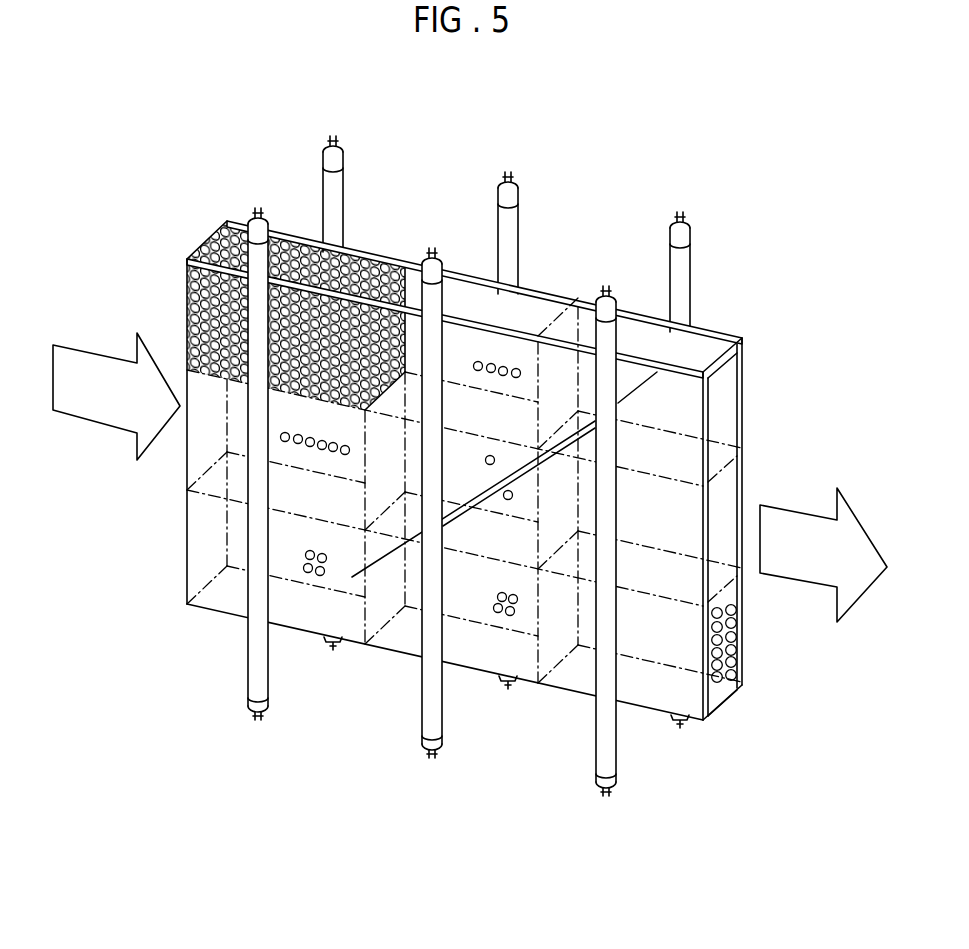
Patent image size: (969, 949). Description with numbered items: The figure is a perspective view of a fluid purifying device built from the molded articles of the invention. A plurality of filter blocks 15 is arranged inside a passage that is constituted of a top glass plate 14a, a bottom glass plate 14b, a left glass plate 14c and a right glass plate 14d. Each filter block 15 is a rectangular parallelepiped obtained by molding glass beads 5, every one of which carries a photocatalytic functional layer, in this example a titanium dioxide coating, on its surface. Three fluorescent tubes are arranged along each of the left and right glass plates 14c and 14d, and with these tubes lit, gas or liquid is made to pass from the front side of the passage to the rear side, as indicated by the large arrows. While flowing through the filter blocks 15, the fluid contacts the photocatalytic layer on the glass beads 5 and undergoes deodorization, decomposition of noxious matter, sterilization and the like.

The glass bead 5 is at (214, 238).
The filter block 15 is at (284, 242).
The top glass plate 14a is at (530, 305).
The bottom glass plate 14b is at (487, 650).
The left glass plate 14c is at (677, 400).
The right glass plate 14d is at (743, 363).